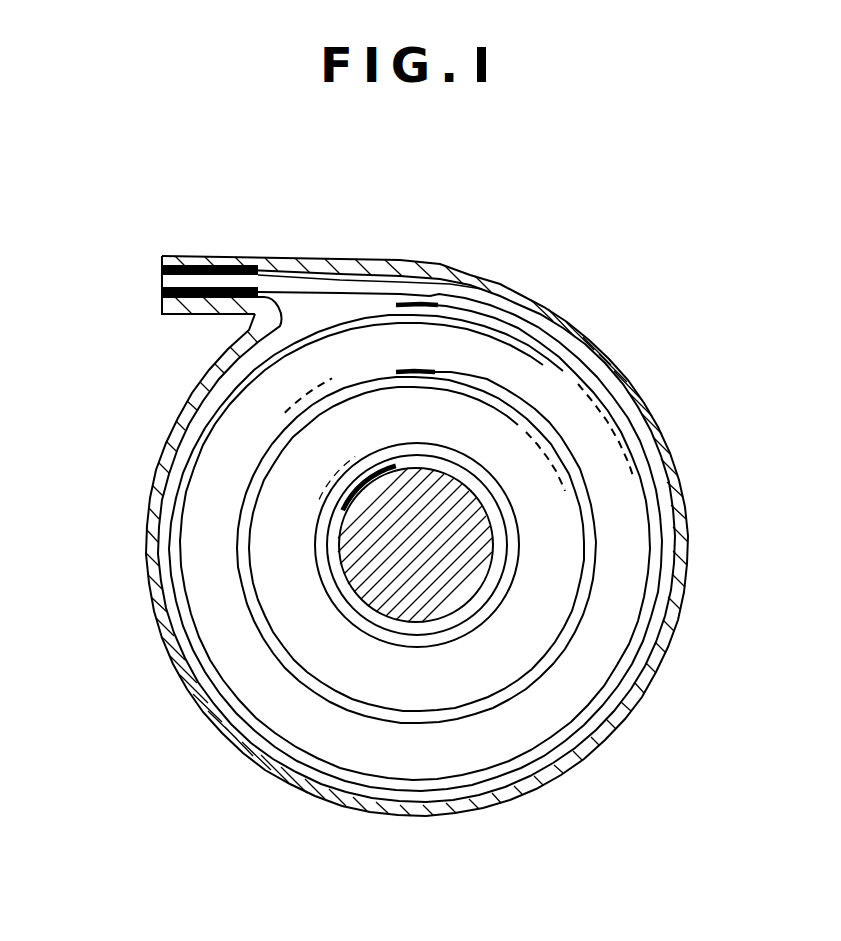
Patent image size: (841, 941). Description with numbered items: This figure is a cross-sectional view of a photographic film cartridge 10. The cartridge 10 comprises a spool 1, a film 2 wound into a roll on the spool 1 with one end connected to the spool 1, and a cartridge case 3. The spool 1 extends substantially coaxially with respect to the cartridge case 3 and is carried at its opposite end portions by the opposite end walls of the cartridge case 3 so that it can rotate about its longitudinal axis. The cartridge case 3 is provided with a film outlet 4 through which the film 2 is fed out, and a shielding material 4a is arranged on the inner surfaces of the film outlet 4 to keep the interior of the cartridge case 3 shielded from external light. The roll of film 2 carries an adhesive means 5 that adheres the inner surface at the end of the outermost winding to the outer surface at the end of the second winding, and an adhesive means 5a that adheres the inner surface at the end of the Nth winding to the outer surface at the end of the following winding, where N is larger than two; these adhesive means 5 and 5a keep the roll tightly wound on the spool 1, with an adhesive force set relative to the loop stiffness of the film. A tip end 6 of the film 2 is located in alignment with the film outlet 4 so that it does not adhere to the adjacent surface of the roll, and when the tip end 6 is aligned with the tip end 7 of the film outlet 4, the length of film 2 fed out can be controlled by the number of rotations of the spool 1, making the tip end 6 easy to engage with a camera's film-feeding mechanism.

The spool 1 is at (468, 597).
The film 2 is at (617, 380).
The cartridge case 3 is at (680, 459).
The film outlet 4 is at (171, 326).
The shielding material 4a is at (162, 269).
The adhesive means 5 is at (428, 300).
The adhesive means 5a is at (433, 373).
The tip end of the film 6 is at (162, 280).
The tip end of the film outlet 7 is at (163, 260).
The photographic film cartridge 10 is at (222, 756).